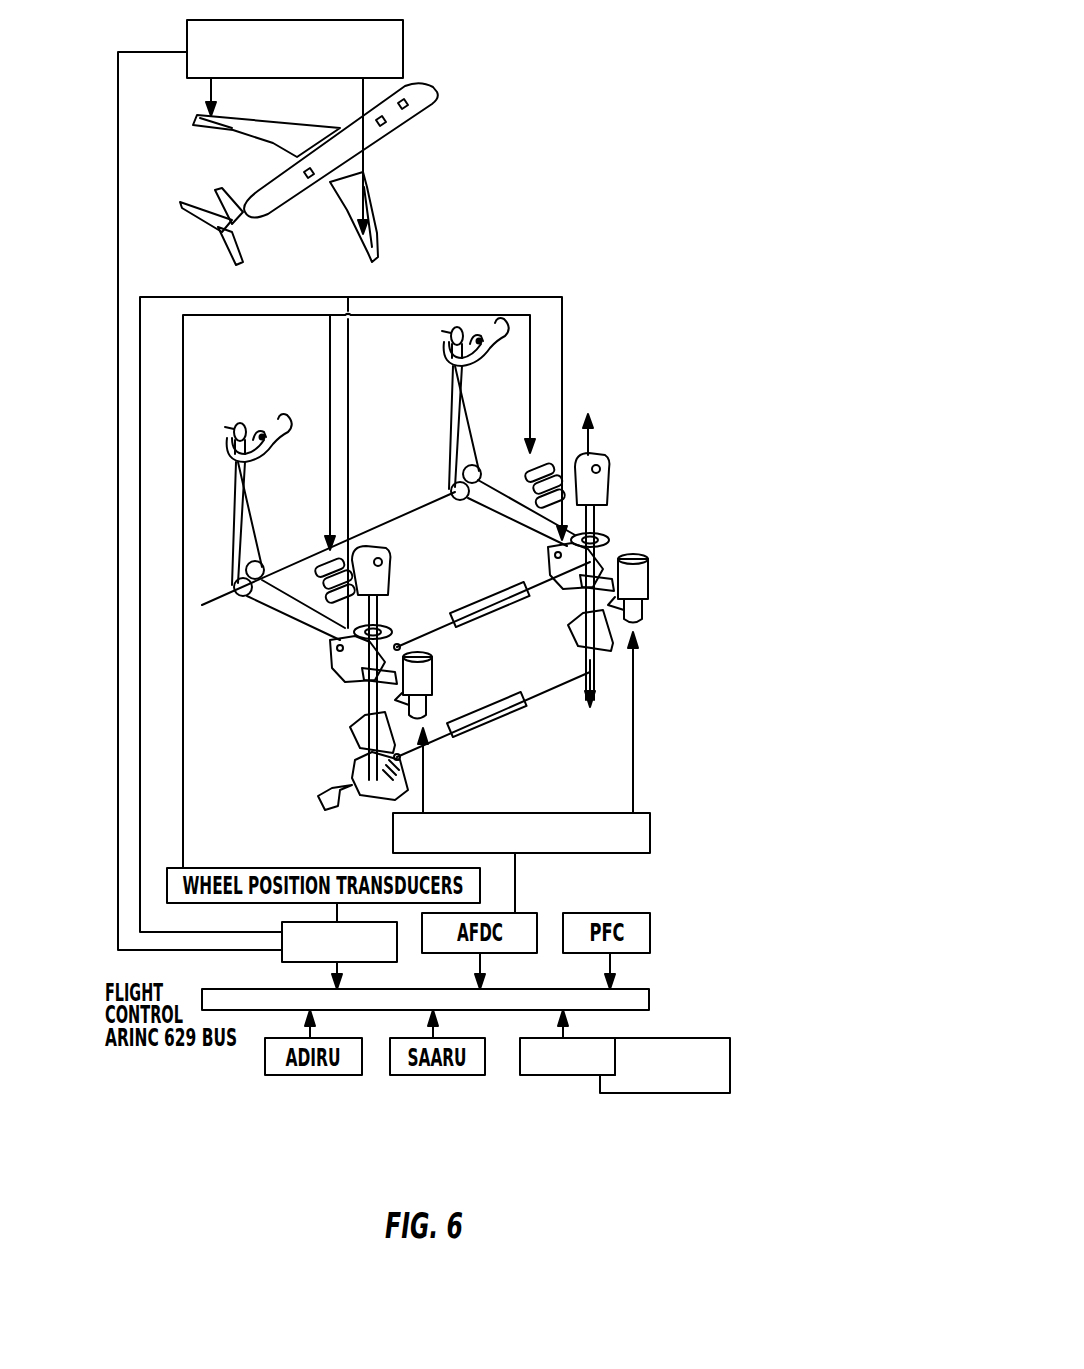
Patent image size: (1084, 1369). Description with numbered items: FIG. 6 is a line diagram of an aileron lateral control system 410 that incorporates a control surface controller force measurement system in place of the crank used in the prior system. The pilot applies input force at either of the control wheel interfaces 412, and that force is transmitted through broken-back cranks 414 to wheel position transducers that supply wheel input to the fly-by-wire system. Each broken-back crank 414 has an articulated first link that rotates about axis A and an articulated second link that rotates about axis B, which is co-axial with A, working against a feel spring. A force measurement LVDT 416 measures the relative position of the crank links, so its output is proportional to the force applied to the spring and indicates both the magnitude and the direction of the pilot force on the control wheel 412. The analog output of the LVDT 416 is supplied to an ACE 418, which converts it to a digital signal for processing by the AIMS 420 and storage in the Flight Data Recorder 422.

The flight control system 410 is at (625, 277).
The control wheel interface 412 is at (282, 423).
The broken-back crank 414 is at (408, 640).
The force measurement LVDT 416 is at (340, 662).
The ACE 418 is at (290, 963).
The AIMS 420 is at (562, 1077).
The Flight Data Recorder 422 is at (690, 1040).